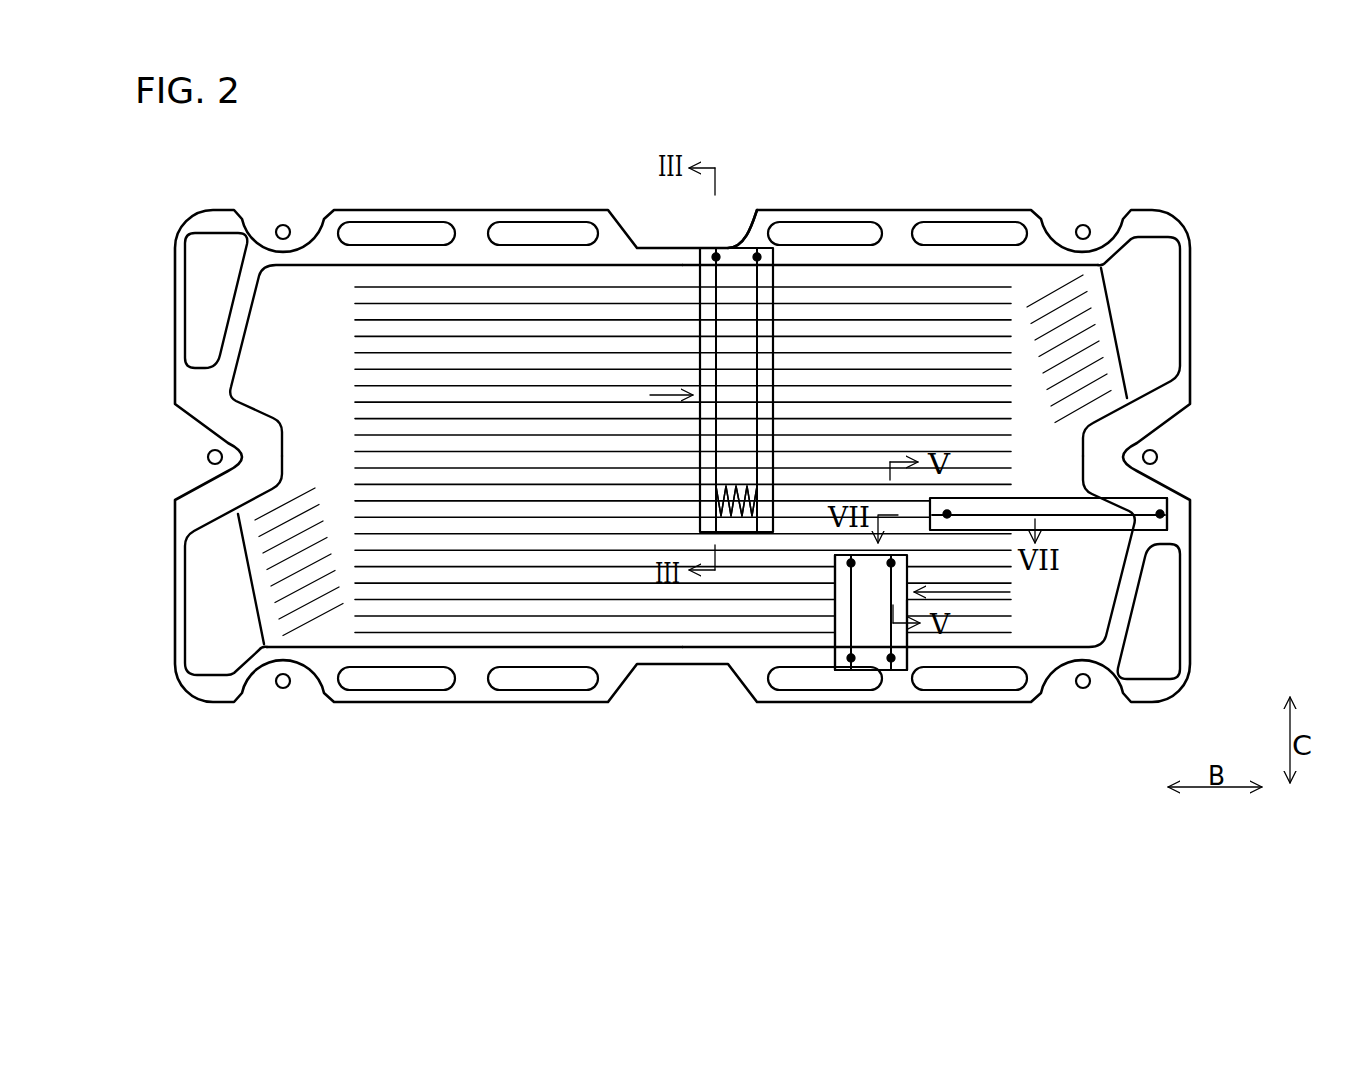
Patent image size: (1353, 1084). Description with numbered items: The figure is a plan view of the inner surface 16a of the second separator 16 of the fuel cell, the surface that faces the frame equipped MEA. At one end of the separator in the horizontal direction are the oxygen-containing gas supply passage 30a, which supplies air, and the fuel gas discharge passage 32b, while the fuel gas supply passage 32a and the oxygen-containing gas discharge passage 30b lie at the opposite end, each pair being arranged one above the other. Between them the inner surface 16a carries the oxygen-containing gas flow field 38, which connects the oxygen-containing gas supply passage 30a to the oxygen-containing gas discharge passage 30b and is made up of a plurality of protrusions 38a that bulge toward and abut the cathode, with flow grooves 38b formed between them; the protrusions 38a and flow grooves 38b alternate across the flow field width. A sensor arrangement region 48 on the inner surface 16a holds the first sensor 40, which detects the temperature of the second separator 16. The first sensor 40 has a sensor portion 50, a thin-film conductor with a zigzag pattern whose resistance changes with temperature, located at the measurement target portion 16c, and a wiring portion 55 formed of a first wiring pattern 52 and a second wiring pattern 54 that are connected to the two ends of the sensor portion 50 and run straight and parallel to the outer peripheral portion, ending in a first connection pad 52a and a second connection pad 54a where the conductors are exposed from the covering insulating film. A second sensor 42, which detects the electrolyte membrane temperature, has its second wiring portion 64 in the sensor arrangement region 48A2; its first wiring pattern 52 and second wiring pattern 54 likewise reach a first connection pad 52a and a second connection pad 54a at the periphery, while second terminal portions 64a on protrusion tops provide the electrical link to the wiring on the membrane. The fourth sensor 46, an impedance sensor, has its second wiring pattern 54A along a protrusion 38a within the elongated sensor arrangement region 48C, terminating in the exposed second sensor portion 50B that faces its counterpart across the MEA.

The second separator 16 is at (393, 216).
The inner surface 16a is at (468, 262).
The measurement target portion 16c is at (760, 490).
The oxygen-containing gas supply passage 30a is at (197, 593).
The oxygen-containing gas discharge passage 30b is at (1165, 305).
The fuel gas supply passage 32a is at (1168, 633).
The fuel gas discharge passage 32b is at (200, 303).
The oxygen-containing gas flow field 38 is at (530, 285).
The protrusion 38a is at (970, 320).
The flow groove 38b is at (895, 313).
The first sensor 40 is at (781, 256).
The second sensor 42 is at (826, 661).
The fourth sensor 46 is at (1092, 536).
The sensor arrangement region 48 is at (773, 377).
The sensor arrangement region 48A2 is at (905, 662).
The sensor arrangement region 48C is at (1068, 497).
The sensor portion 50 is at (740, 505).
The second sensor portion 50B is at (947, 517).
The first wiring pattern 52 is at (716, 333).
The first connection pad 52a is at (716, 253).
The second wiring pattern 54 is at (758, 344).
The second connection pad 54a is at (757, 253).
The second wiring pattern 54A is at (1164, 510).
The wiring portion 55 is at (831, 499).
The second wiring portion 64 is at (893, 662).
The second terminal portion 64a is at (891, 565).